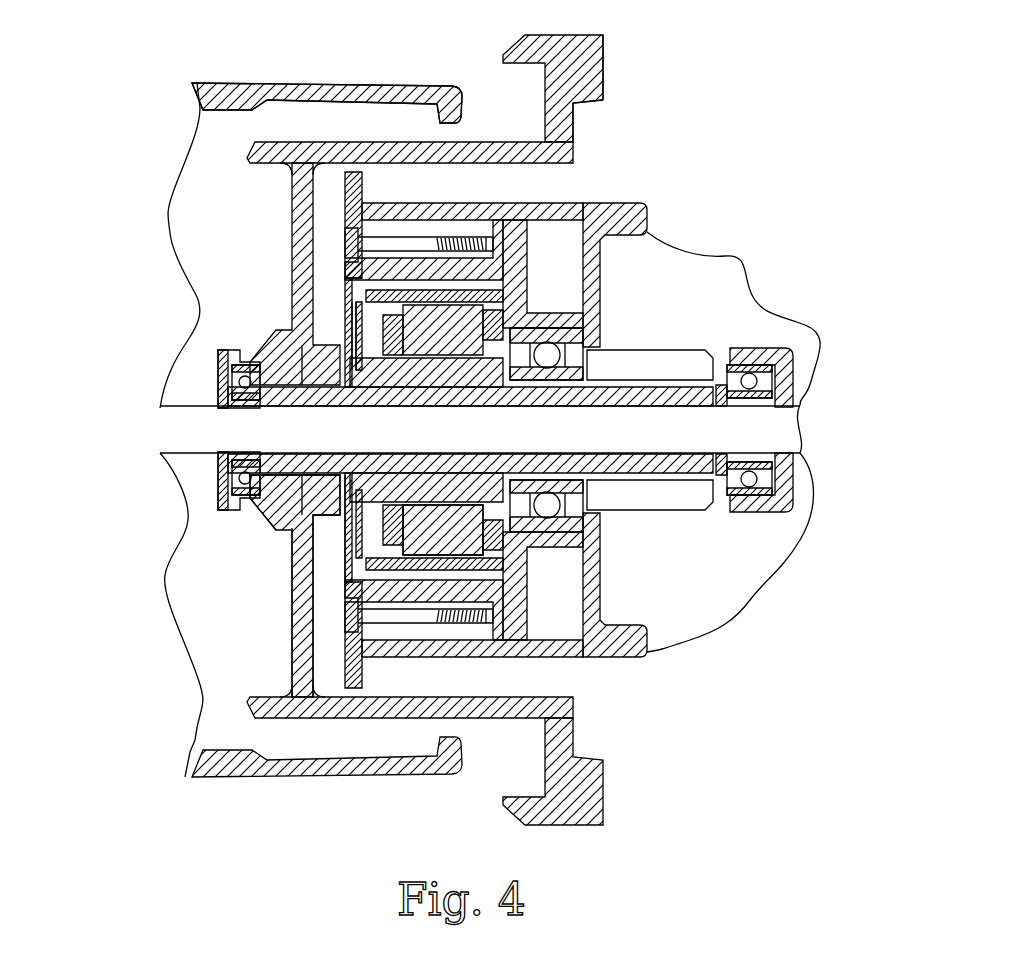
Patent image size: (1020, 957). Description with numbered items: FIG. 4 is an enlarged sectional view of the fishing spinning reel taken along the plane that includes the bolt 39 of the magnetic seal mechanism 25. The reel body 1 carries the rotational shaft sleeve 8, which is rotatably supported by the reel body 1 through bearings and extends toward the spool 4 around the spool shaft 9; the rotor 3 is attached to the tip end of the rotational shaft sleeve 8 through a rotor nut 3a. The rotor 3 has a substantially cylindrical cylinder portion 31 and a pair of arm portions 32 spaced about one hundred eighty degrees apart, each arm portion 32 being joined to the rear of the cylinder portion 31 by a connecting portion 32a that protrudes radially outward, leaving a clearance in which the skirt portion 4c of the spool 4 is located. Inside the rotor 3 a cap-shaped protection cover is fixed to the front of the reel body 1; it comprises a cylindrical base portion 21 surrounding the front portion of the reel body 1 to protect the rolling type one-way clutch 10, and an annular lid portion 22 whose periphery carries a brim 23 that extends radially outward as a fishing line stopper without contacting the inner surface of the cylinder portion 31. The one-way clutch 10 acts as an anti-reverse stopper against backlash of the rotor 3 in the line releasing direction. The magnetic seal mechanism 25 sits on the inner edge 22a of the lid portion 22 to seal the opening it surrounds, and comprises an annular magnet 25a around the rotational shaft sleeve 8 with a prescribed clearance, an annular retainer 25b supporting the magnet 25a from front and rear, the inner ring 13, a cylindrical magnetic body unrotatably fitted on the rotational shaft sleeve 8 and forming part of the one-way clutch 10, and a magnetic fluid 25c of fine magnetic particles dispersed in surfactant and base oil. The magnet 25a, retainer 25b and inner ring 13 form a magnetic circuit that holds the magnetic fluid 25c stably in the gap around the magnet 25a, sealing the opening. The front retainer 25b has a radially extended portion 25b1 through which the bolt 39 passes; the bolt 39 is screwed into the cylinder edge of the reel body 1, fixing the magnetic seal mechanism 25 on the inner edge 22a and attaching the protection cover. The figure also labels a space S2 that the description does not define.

The reel body 1 is at (624, 220).
The rotor 3 is at (278, 191).
The rotor nut 3a is at (286, 518).
The spool 4 is at (425, 98).
The skirt portion 4c is at (425, 98).
The rotational shaft sleeve 8 is at (650, 376).
The spool shaft 9 is at (788, 432).
The one-way clutch 10 is at (418, 532).
The inner ring 13 is at (445, 400).
The base portion 21 is at (515, 212).
The lid portion 22 is at (358, 220).
The inner edge 22a is at (335, 284).
The brim 23 is at (356, 172).
The magnetic seal mechanism 25 is at (325, 572).
The magnet 25a is at (325, 295).
The retainer 25b is at (346, 280).
The extended portion 25b1 is at (347, 600).
The magnetic fluid 25c is at (380, 388).
The cylinder portion 31 is at (300, 640).
The arm portion 32 is at (577, 53).
The connecting portion 32a is at (572, 138).
The bolt 39 is at (424, 247).
The space S2 is at (667, 130).